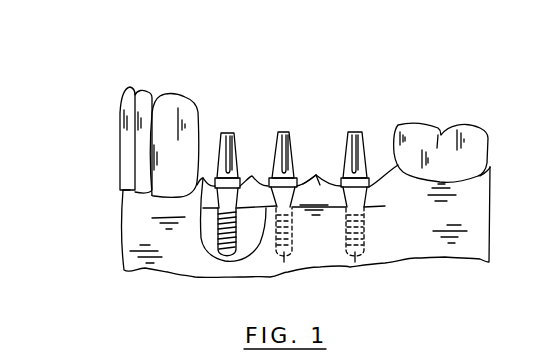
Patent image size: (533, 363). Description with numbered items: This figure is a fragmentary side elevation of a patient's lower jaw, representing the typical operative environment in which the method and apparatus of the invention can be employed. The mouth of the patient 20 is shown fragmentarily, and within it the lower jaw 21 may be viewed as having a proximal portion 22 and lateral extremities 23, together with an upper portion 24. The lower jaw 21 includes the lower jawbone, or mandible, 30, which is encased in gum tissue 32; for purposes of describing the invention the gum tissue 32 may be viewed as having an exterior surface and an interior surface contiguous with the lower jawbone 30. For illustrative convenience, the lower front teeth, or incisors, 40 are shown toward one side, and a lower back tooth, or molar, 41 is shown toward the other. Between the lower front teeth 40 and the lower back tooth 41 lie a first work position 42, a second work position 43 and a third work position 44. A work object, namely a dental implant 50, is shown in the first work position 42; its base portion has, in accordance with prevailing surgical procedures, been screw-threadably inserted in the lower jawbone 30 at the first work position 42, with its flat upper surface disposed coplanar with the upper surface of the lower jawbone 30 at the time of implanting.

The mouth of a patient 20 is at (297, 117).
The lower jaw 21 is at (440, 203).
The proximal portion 22 is at (133, 220).
The lateral extremities 23 is at (382, 228).
The upper portion 24 is at (408, 182).
The lower jawbone 30 is at (257, 225).
The gum tissue 32 is at (316, 175).
The lower front teeth 40 is at (178, 98).
The lower back tooth 41 is at (472, 140).
The first work position 42 is at (228, 130).
The second work position 43 is at (282, 129).
The third work position 44 is at (356, 120).
The dental implant 50 is at (242, 210).